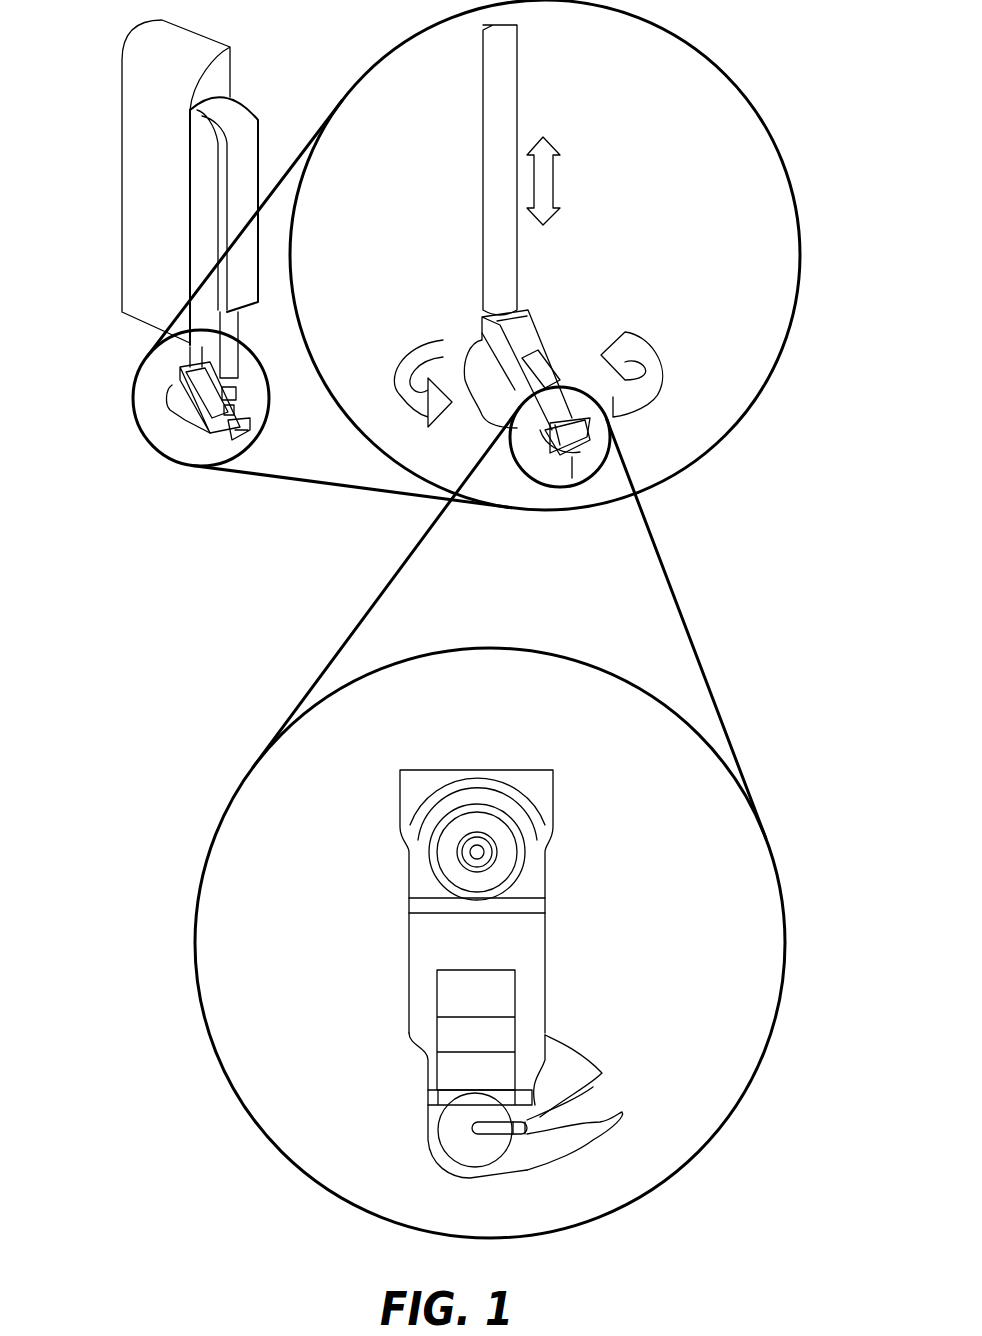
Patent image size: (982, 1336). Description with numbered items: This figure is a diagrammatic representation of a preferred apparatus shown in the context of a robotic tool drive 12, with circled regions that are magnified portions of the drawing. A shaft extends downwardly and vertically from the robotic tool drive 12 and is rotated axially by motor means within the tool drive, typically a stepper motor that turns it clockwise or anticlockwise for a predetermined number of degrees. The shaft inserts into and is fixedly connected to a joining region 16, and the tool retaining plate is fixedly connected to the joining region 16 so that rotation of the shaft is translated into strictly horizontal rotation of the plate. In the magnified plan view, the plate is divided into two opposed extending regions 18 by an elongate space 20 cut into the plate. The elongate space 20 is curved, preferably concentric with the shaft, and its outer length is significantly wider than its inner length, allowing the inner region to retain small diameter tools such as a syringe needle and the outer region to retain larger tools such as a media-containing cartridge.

The robotic tool drive 12 is at (140, 178).
The joining region 16 is at (520, 947).
The opposed extending regions 18 is at (560, 1072).
The elongate space 20 is at (590, 1105).